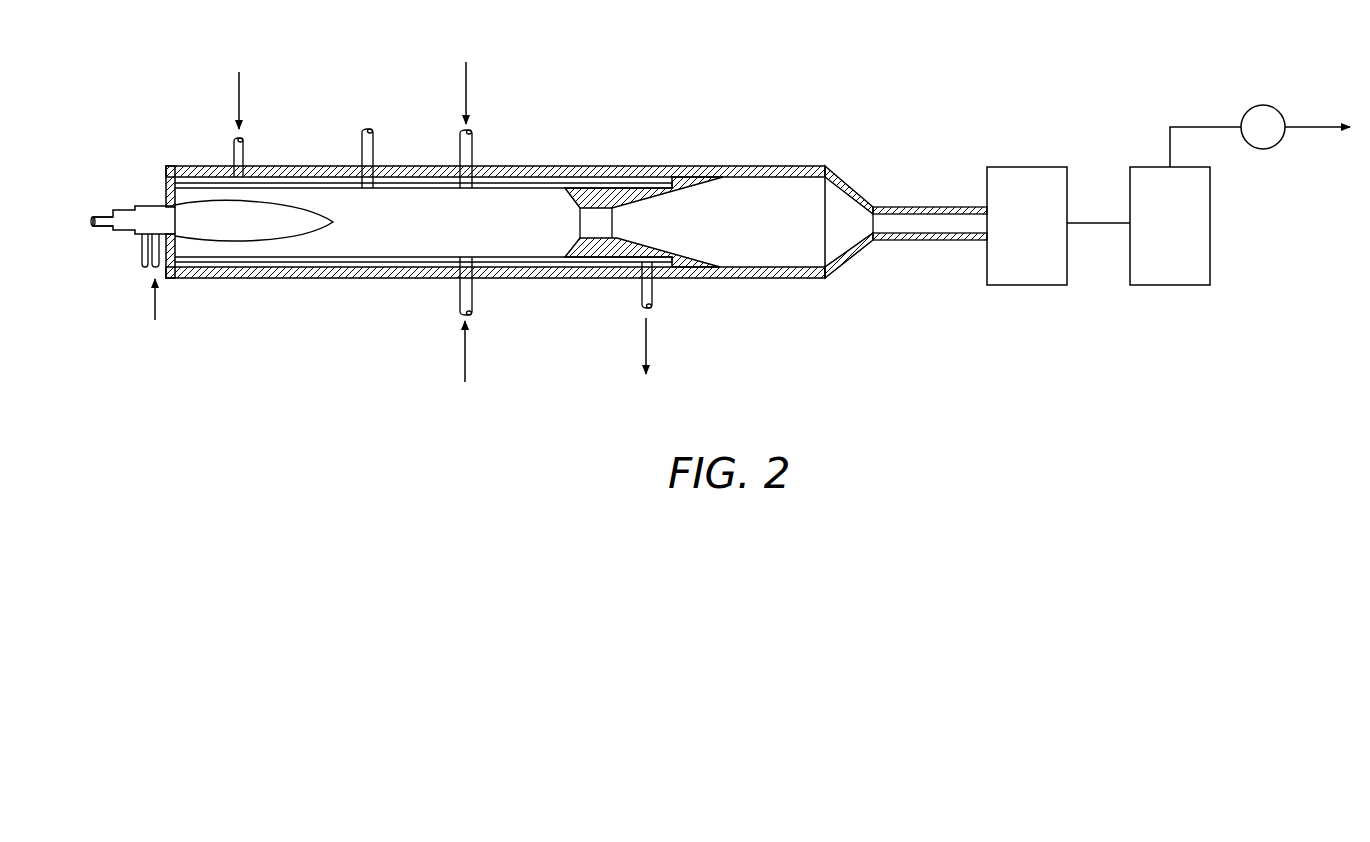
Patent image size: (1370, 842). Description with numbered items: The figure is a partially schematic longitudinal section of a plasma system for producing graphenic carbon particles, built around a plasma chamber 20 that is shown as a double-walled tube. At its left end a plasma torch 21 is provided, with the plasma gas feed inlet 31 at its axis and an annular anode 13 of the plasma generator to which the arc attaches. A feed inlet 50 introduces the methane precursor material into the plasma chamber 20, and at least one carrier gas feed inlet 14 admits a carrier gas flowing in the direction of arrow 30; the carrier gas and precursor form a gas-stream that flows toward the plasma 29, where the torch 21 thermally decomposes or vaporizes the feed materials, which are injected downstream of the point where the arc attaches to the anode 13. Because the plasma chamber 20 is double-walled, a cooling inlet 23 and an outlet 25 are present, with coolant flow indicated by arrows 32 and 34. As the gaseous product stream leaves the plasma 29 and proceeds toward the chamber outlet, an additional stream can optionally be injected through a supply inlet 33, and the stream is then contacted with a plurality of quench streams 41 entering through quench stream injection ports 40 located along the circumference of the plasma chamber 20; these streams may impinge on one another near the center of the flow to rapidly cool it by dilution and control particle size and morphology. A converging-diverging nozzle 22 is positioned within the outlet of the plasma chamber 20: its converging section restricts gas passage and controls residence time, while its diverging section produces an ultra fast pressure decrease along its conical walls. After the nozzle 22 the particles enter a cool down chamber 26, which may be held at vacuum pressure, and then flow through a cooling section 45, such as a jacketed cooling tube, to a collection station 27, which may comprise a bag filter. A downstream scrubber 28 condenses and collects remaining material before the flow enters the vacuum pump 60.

The annular anode 13 is at (135, 206).
The carrier gas feed inlet 14 is at (152, 258).
The plasma chamber 20 is at (346, 305).
The plasma torch 21 is at (180, 166).
The nozzle 22 is at (552, 203).
The cooling inlet 23 is at (245, 155).
The cooling outlet 25 is at (652, 290).
The cool down chamber 26 is at (765, 255).
The collection station 27 is at (1014, 239).
The scrubber 28 is at (1157, 239).
The plasma 29 is at (287, 227).
The carrier gas flow arrow 30 is at (155, 305).
The plasma gas feed inlet 31 is at (102, 215).
The coolant flow arrow 32 is at (240, 91).
The supply inlet 33 is at (375, 150).
The coolant flow arrow 34 is at (646, 347).
The quench stream injection ports 40 is at (472, 150).
The quench streams 41 is at (466, 73).
The cooling section 45 is at (922, 207).
The feed inlet 50 is at (140, 243).
The vacuum pump 60 is at (1262, 105).